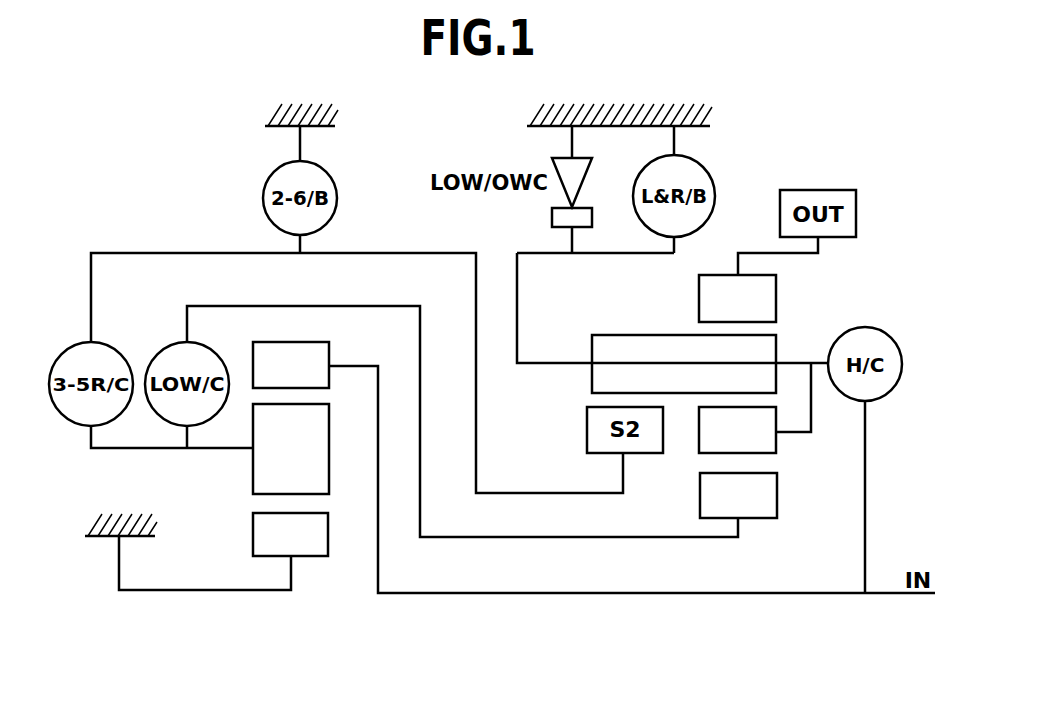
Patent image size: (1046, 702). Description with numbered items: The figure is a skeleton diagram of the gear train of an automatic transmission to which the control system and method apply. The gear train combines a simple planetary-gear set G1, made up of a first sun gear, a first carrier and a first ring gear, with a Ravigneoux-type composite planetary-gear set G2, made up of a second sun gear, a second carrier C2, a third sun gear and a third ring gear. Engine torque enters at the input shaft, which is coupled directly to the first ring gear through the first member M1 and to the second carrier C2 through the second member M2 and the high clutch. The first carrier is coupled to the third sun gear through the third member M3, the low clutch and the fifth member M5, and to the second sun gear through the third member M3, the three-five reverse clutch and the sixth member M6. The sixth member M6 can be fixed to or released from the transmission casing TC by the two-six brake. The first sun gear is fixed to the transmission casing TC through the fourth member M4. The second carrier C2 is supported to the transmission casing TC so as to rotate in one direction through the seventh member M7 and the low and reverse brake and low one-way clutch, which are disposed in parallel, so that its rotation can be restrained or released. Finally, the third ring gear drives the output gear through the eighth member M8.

The transmission casing TC is at (325, 126).
The first member M1 is at (497, 593).
The second member M2 is at (865, 463).
The third member M3 is at (215, 449).
The fourth member M4 is at (220, 590).
The fifth member M5 is at (497, 537).
The sixth member M6 is at (495, 493).
The seventh member M7 is at (517, 282).
The eighth member M8 is at (747, 252).
The second carrier C2 is at (647, 334).
The simple planetary-gear set G1 is at (317, 566).
The Ravigneoux-type composite planetary-gear set G2 is at (782, 500).